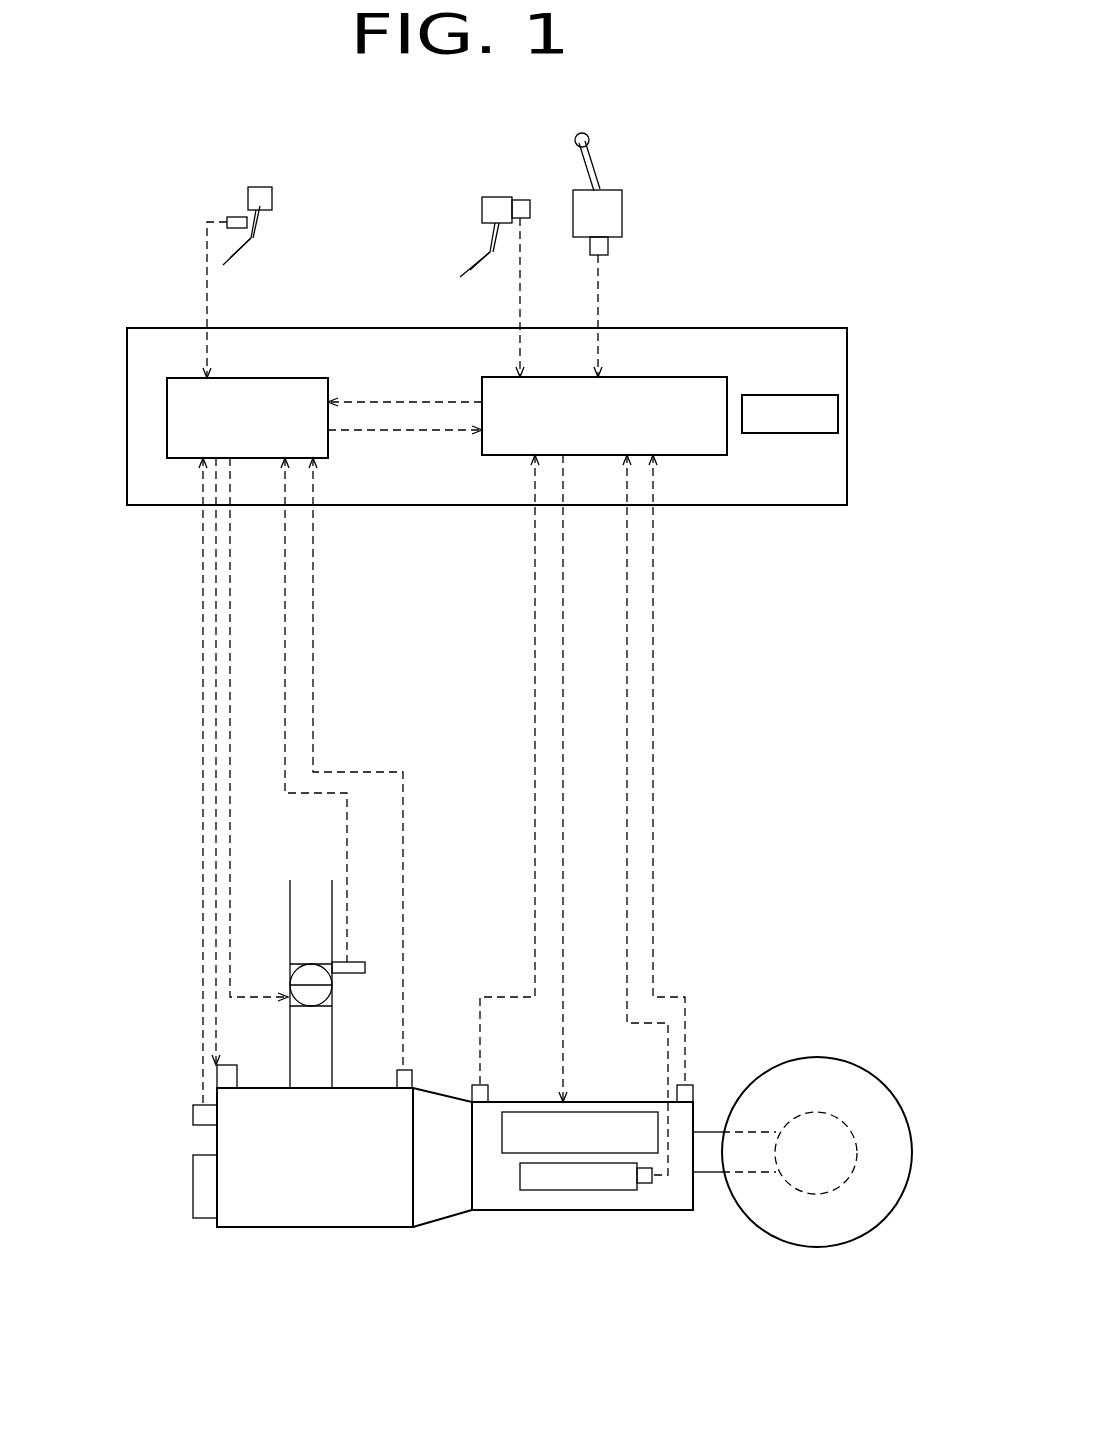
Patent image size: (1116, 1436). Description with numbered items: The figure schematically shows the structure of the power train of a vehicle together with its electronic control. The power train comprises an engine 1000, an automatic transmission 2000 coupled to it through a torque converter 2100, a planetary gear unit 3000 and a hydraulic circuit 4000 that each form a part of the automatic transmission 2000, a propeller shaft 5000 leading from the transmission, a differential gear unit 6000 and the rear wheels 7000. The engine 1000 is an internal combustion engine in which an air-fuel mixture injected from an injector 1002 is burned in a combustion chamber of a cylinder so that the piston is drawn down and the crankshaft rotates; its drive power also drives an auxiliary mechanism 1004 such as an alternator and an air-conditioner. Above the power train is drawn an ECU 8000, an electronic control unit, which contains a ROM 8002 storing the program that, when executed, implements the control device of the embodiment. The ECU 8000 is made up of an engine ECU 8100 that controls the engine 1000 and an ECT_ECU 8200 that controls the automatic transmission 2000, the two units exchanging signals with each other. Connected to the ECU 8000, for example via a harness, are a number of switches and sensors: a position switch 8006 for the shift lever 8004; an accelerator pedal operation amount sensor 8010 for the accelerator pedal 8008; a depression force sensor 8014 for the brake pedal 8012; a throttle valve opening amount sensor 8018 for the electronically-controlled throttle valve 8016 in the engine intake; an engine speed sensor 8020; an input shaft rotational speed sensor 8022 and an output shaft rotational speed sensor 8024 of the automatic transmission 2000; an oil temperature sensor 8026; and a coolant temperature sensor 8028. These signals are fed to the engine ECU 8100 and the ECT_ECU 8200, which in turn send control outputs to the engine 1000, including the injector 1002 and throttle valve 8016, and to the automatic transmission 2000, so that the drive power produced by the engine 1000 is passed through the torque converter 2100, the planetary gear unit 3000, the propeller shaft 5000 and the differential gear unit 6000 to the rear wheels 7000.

The engine 1000 is at (317, 1227).
The injector 1002 is at (213, 1062).
The auxiliary mechanism 1004 is at (193, 1188).
The automatic transmission 2000 is at (518, 1210).
The torque converter 2100 is at (443, 1218).
The planetary gear unit 3000 is at (610, 1112).
The hydraulic circuit 4000 is at (553, 1190).
The propeller shaft 5000 is at (707, 1173).
The differential gear unit 6000 is at (823, 1112).
The rear wheels 7000 is at (820, 1248).
The ECU 8000 is at (188, 328).
The ROM 8002 is at (795, 395).
The shift lever 8004 is at (604, 174).
The position switch 8006 is at (608, 245).
The accelerator pedal 8008 is at (260, 235).
The accelerator pedal operation amount sensor 8010 is at (228, 217).
The brake pedal 8012 is at (490, 233).
The depression force sensor 8014 is at (518, 200).
The electronically-controlled throttle valve 8016 is at (290, 965).
The throttle valve opening amount sensor 8018 is at (365, 968).
The engine speed sensor 8020 is at (193, 1115).
The input shaft rotational speed sensor 8022 is at (488, 1092).
The output shaft rotational speed sensor 8024 is at (693, 1092).
The oil temperature sensor 8026 is at (650, 1187).
The coolant temperature sensor 8028 is at (420, 1058).
The engine ECU 8100 is at (307, 378).
The ECT_ECU 8200 is at (687, 377).